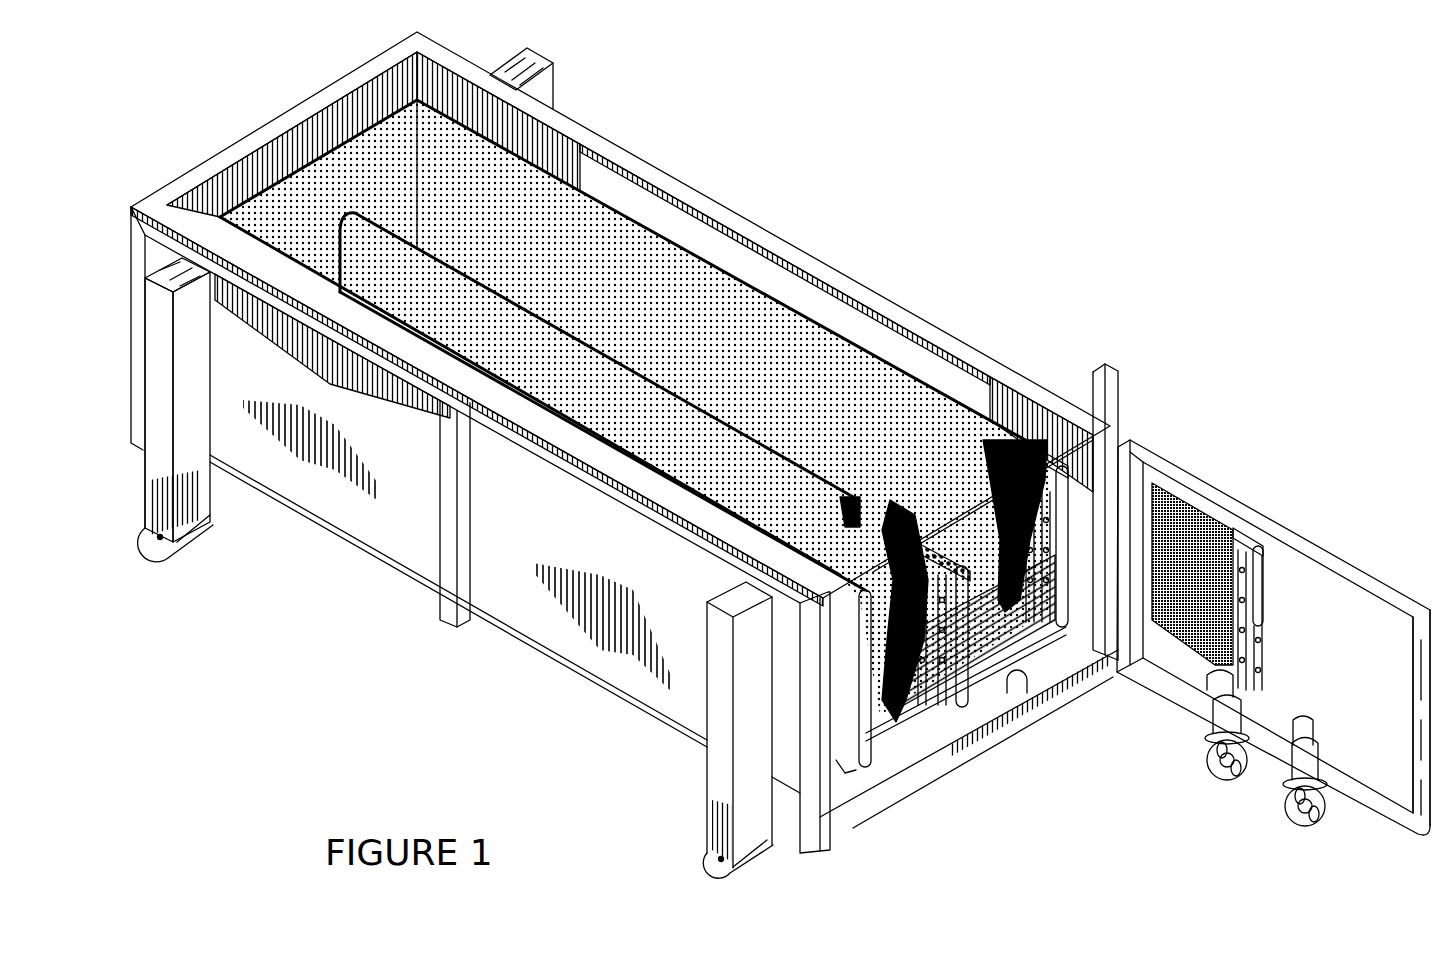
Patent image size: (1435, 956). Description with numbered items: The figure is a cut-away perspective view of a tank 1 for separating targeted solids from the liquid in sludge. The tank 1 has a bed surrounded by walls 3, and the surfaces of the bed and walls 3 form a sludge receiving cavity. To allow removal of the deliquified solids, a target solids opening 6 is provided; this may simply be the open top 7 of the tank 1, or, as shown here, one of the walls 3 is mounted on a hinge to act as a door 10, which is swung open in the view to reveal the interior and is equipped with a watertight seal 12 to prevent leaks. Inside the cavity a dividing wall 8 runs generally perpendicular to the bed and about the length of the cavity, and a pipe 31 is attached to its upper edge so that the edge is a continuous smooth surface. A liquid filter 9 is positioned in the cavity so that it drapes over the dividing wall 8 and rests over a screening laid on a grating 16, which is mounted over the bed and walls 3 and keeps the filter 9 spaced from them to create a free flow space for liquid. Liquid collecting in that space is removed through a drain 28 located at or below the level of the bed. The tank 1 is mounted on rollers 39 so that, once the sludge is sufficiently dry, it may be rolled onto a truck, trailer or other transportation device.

The tank 1 is at (780, 455).
The walls 3 is at (200, 203).
The target solids opening 6 is at (1050, 550).
The open top 7 is at (557, 187).
The dividing wall 8 is at (965, 643).
The liquid filter 9 is at (845, 500).
The door 10 is at (1273, 637).
The watertight seal 12 is at (1397, 688).
The grating 16 is at (1263, 593).
The drain 28 is at (1290, 727).
The pipe 31 is at (932, 530).
The rollers 39 is at (186, 547).